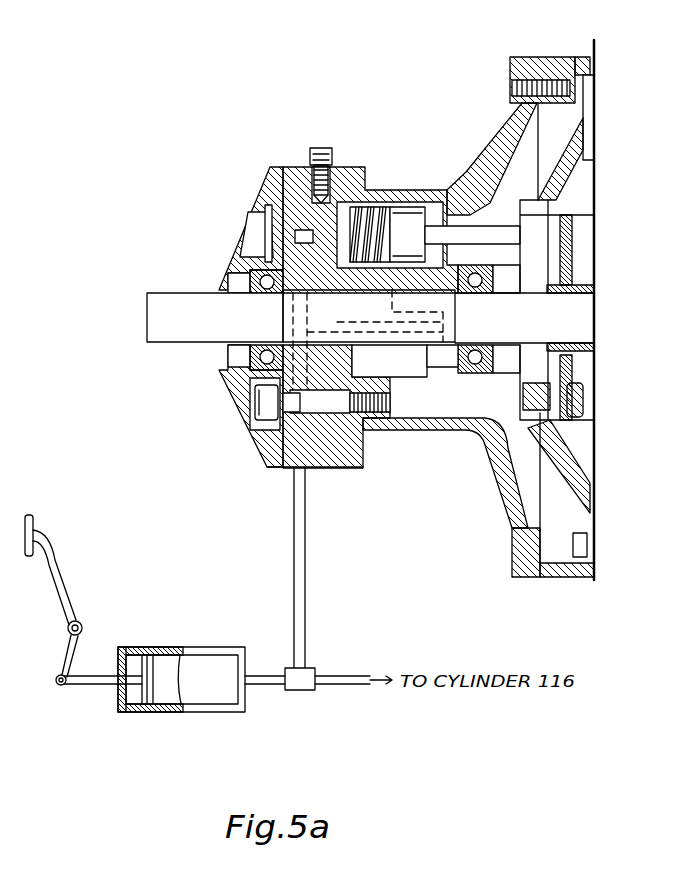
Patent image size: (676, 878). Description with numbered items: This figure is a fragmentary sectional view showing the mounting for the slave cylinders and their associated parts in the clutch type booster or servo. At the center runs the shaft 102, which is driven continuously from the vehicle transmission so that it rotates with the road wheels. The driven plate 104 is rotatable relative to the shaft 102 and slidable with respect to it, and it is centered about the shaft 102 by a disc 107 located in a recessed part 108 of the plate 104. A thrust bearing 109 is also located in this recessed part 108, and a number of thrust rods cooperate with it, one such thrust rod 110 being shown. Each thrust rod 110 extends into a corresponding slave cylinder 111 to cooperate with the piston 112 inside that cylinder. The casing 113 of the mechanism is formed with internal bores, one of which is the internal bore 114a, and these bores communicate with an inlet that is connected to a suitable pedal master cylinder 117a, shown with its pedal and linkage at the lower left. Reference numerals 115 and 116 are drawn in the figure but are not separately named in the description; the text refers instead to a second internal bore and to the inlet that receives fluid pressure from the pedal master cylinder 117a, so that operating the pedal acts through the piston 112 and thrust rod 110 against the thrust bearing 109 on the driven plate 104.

The shaft 102 is at (215, 316).
The driven plate 104 is at (513, 562).
The disc 107 is at (483, 441).
The recessed part 108 is at (568, 215).
The thrust bearing 109 is at (543, 230).
The thrust rod 110 is at (452, 185).
The slave cylinder 111 is at (408, 198).
The piston 112 is at (340, 205).
The casing 113 is at (333, 447).
The internal bore 114a is at (313, 237).
The cylinder head 115 is at (240, 378).
The cylinder 116 is at (265, 466).
The pedal master cylinder 117a is at (224, 703).